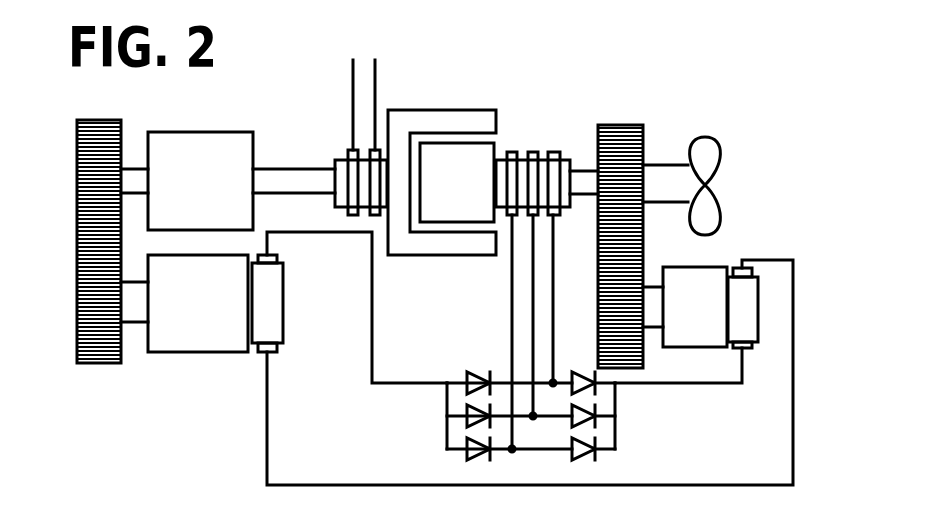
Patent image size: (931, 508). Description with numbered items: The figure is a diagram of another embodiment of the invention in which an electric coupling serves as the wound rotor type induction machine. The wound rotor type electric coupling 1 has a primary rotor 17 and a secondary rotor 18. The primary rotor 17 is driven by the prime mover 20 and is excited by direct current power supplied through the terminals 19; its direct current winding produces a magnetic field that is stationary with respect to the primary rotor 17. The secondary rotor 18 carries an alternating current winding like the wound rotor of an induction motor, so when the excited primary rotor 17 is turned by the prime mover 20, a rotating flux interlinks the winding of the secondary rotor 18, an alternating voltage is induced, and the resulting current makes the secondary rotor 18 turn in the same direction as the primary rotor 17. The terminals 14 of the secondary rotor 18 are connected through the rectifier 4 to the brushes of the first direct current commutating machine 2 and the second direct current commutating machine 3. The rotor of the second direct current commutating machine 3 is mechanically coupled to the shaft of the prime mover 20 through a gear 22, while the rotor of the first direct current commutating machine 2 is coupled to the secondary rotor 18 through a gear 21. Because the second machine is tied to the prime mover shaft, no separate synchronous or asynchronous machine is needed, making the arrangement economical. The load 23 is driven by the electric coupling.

The wound rotor type electric coupling 1 is at (530, 230).
The first direct current commutating machine 2 is at (757, 347).
The second direct current commutating machine 3 is at (197, 352).
The rectifier 4 is at (482, 367).
The terminals 14 is at (552, 218).
The primary rotor 17 is at (393, 112).
The secondary rotor 18 is at (457, 182).
The terminals 19 is at (373, 150).
The prime mover 20 is at (163, 132).
The gear 21 is at (633, 124).
The gear 22 is at (115, 119).
The load 23 is at (703, 137).